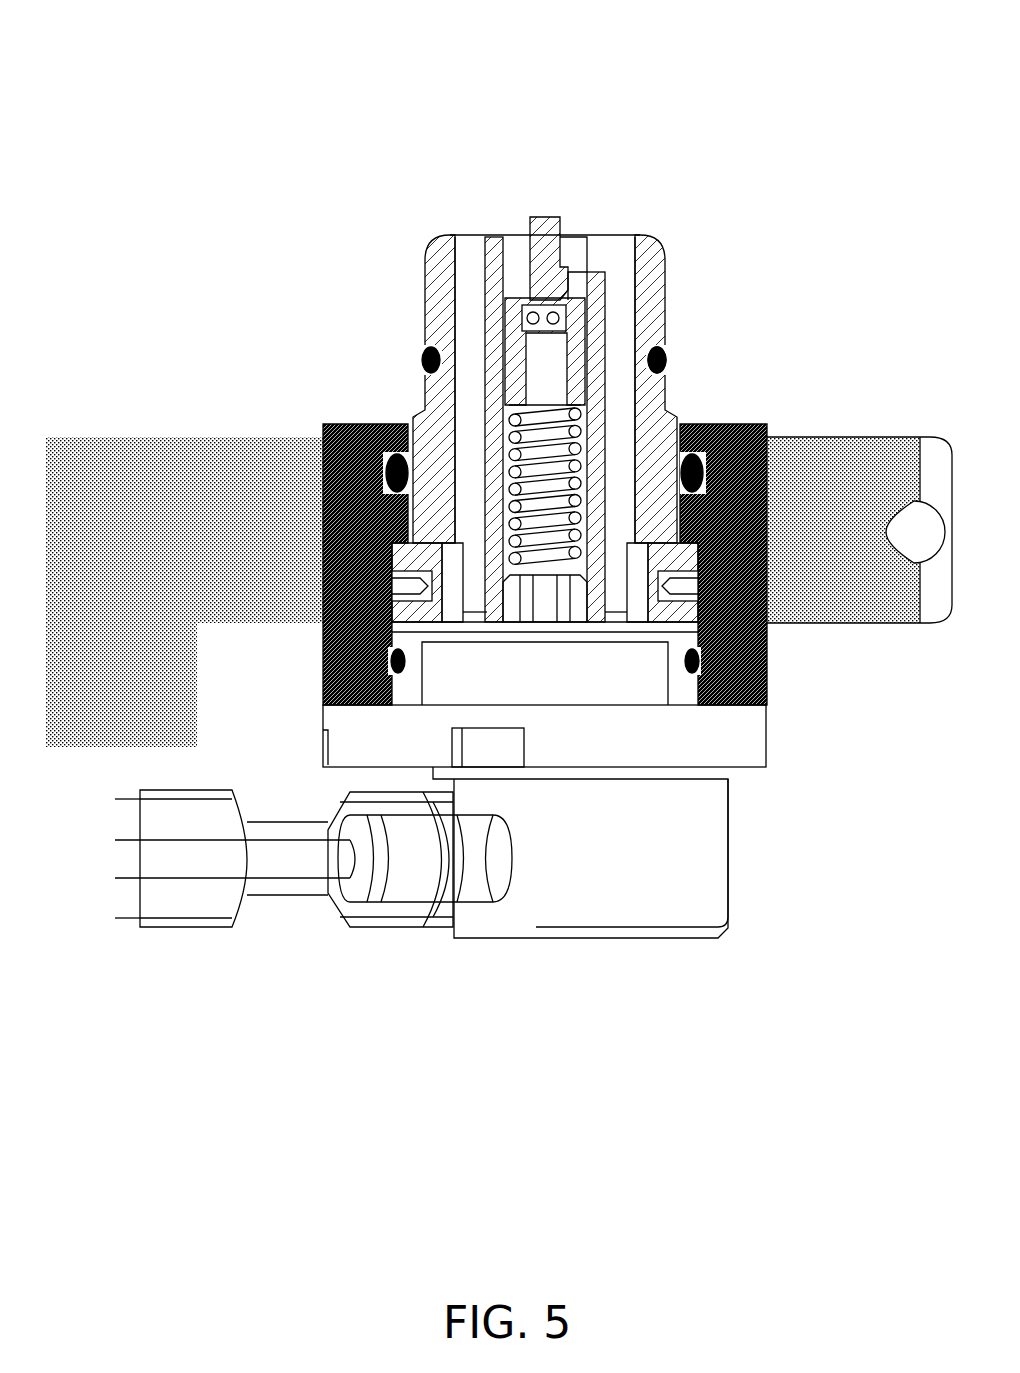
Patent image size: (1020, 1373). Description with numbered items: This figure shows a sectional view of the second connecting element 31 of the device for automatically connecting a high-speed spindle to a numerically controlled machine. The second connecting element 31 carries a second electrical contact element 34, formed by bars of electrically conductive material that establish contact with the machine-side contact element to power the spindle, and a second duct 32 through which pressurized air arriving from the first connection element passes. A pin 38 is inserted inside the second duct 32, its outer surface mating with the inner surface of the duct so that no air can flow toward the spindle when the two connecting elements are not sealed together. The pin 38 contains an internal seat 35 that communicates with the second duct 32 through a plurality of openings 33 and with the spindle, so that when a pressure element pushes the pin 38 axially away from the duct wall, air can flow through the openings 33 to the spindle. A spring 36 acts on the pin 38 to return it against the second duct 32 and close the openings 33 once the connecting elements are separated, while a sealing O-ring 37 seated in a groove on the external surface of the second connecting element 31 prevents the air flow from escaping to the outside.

The second connecting element 31 is at (312, 149).
The second duct 32 is at (581, 311).
The openings 33 is at (533, 318).
The second electrical contact element 34 is at (613, 614).
The internal seat 35 is at (541, 360).
The spring 36 is at (545, 553).
The sealing O-ring 37 is at (663, 360).
The pin 38 is at (543, 229).